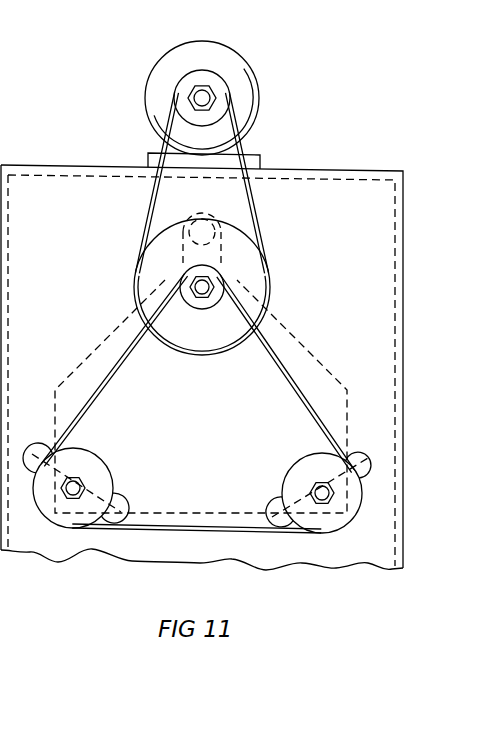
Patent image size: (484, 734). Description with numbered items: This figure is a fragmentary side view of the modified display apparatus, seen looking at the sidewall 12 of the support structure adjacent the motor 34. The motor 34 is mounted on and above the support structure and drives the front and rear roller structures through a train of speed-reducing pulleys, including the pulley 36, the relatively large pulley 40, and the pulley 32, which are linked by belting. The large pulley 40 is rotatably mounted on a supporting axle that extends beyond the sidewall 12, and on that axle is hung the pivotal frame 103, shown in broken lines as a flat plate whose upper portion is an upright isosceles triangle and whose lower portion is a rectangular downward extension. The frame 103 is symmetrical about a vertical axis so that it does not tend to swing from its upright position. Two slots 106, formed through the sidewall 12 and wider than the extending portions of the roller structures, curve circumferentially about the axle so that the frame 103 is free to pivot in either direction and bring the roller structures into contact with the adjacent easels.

The sidewall 12 is at (33, 554).
The speed-reducing pulley 32 is at (94, 457).
The motor 34 is at (164, 61).
The speed-reducing pulley 36 is at (222, 78).
The relatively large pulley 40 is at (216, 339).
The pivotal frame 103 is at (303, 343).
The slot 106 is at (360, 452).